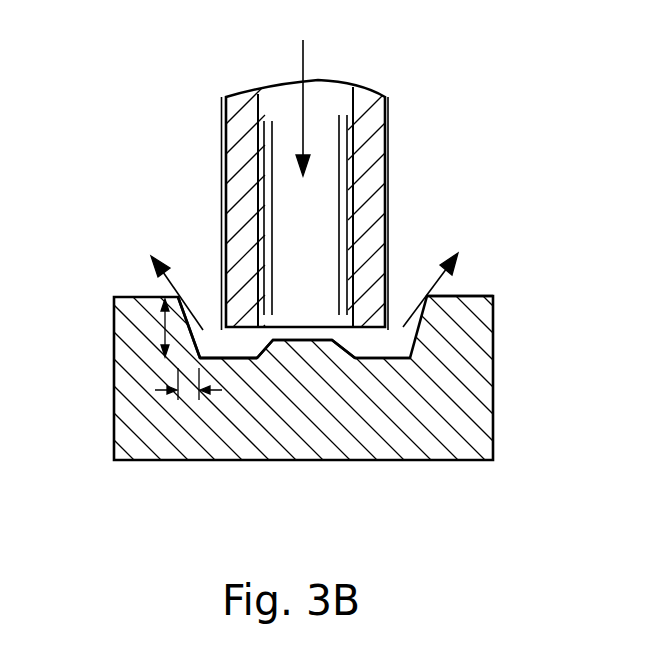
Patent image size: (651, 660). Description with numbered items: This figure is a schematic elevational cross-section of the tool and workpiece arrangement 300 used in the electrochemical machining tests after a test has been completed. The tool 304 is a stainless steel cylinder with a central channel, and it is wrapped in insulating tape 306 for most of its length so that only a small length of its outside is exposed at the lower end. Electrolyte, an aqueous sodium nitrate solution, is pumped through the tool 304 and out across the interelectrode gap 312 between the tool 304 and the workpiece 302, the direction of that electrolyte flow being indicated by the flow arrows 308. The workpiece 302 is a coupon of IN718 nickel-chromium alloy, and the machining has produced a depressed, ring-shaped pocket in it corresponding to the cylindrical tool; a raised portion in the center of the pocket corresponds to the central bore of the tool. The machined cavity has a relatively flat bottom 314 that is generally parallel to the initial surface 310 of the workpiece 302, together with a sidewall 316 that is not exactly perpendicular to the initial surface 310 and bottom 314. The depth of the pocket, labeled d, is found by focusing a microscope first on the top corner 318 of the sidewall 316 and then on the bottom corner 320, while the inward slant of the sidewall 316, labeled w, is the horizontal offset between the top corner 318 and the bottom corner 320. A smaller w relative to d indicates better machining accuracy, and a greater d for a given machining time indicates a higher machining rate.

The fluid processing system 300 is at (527, 88).
The workpiece 302 is at (333, 430).
The tool 304 is at (385, 160).
The insulating tape 306 is at (221, 152).
The flow arrows 308 is at (303, 60).
The initial surface 310 is at (462, 296).
The interelectrode gap 312 is at (379, 342).
The flat bottom 314 is at (238, 362).
The sidewall 316 is at (178, 360).
The top corner 318 is at (183, 300).
The bottom corner 320 is at (252, 362).